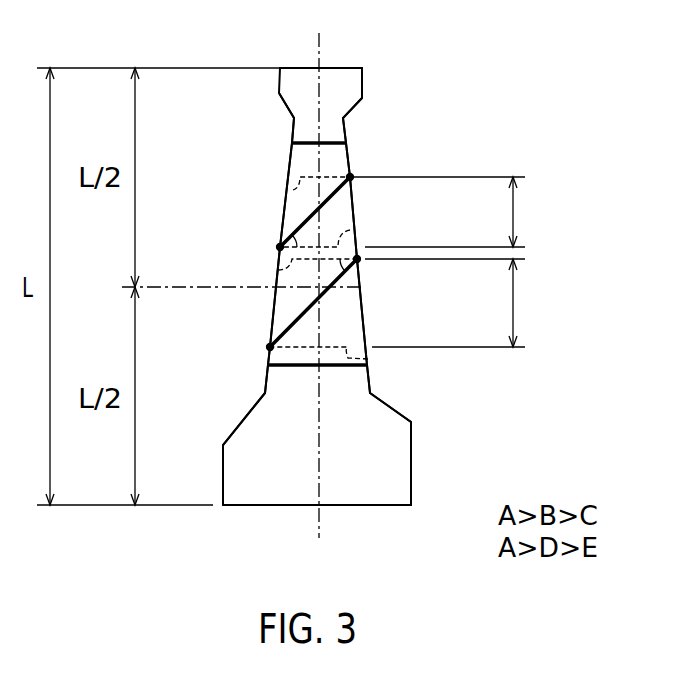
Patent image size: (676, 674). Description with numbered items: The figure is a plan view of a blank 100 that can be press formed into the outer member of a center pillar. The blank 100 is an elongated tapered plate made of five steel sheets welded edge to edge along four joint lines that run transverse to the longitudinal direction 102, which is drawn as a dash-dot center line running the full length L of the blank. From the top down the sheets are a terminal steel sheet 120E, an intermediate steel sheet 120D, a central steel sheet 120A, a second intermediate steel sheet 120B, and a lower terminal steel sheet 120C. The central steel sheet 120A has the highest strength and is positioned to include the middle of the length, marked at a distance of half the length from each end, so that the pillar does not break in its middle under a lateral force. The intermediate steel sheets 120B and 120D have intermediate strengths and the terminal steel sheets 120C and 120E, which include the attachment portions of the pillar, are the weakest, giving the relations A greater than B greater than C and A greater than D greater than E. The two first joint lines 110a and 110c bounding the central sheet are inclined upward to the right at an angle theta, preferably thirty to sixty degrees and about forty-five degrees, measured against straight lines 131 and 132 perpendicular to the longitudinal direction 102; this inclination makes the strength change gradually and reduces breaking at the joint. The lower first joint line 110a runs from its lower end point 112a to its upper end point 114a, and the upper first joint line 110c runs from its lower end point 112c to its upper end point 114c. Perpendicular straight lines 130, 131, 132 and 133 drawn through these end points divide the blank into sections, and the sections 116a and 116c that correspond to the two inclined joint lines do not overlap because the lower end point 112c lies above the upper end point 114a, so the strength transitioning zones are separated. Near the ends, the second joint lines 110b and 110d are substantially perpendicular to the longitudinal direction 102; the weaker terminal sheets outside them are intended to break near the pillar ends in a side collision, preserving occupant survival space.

The blank 100 is at (440, 72).
The longitudinal direction 102 is at (320, 51).
The first joint line 110a is at (323, 293).
The second joint line 110b is at (347, 368).
The first joint line 110c is at (335, 192).
The second joint line 110d is at (334, 143).
The lower end point 112a is at (269, 346).
The lower end point 112c is at (279, 246).
The upper end point 114a is at (360, 262).
The upper end point 114c is at (351, 176).
The section 116a is at (541, 303).
The section 116c is at (541, 212).
The central steel sheet 120A is at (290, 305).
The intermediate steel sheet 120B is at (287, 356).
The terminal steel sheet 120C is at (273, 482).
The intermediate steel sheet 120D is at (300, 162).
The terminal steel sheet 120E is at (302, 88).
The straight line 130 is at (368, 359).
The straight line 131 is at (278, 270).
The straight line 132 is at (350, 230).
The straight line 133 is at (293, 190).